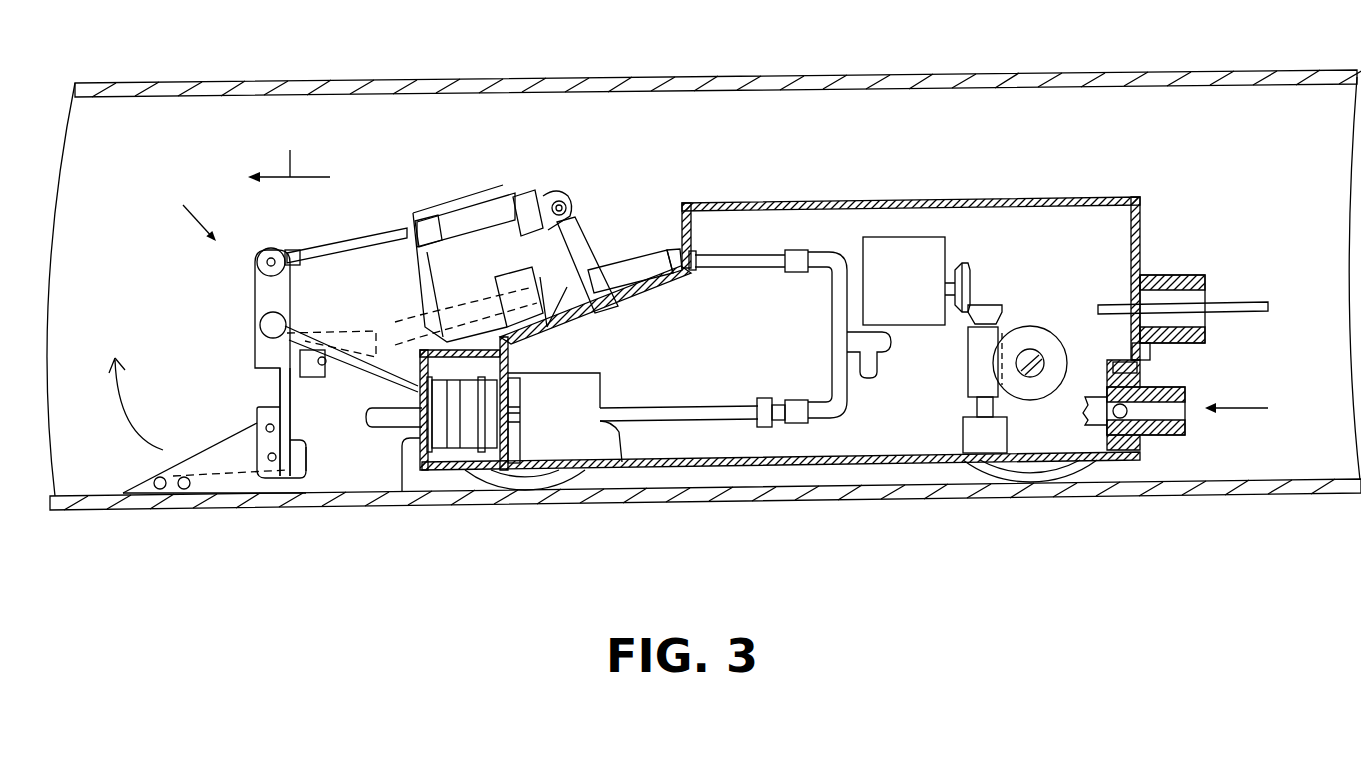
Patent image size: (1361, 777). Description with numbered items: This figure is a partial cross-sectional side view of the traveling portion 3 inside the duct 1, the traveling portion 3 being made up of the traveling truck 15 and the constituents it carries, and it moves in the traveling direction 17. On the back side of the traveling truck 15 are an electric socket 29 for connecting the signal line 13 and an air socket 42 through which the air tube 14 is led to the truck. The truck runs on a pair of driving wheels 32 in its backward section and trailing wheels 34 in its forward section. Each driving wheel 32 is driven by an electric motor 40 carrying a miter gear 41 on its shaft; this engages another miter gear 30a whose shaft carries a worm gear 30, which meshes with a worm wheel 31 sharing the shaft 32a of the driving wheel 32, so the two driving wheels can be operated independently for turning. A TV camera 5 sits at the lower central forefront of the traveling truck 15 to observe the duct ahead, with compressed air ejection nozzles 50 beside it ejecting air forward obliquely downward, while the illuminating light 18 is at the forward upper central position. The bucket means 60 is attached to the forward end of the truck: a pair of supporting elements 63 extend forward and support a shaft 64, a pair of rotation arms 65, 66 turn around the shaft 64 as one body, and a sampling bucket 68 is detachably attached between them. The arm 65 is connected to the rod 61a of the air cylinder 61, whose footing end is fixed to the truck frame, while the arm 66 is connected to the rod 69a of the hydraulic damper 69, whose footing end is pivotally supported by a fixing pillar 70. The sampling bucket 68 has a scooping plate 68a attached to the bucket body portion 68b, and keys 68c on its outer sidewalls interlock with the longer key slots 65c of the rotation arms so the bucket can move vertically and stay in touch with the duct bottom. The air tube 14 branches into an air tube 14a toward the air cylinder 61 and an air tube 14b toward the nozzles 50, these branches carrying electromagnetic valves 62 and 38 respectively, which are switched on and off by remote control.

The duct 1 is at (764, 76).
The traveling portion 3 is at (668, 185).
The TV camera 5 is at (403, 492).
The signal line 13 is at (1254, 313).
The air tube 14 is at (878, 380).
The air tube 14a is at (740, 253).
The air tube 14b is at (830, 422).
The traveling truck 15 is at (727, 470).
The traveling direction 17 is at (289, 146).
The illuminating light 18 is at (441, 207).
The electric socket 29 is at (1187, 273).
The worm gear 30 is at (975, 357).
The miter gear 30a is at (990, 303).
The worm wheel 31 is at (1043, 330).
The driving wheel 32 is at (1030, 482).
The shaft of the driving wheel 32a is at (1034, 378).
The trailing wheel 34 is at (523, 490).
The electromagnetic valve 38 is at (793, 398).
The electric motor 40 is at (913, 235).
The miter gear 41 is at (963, 268).
The air socket 42 is at (1160, 437).
The compressed air ejection nozzle 50 is at (383, 432).
The bucket means 60 is at (176, 205).
The air cylinder 61 is at (628, 266).
The rod 61a is at (388, 318).
The electromagnetic valve 62 is at (801, 248).
The supporting element 63 is at (366, 374).
The shaft 64 is at (260, 324).
The rotation arm 65 is at (253, 293).
The rotation arm 66 is at (285, 422).
The key slot 65c is at (278, 408).
The sampling bucket 68 is at (197, 449).
The scooping plate 68a is at (137, 482).
The bucket body portion 68b is at (218, 470).
The key 68c is at (305, 471).
The hydraulic damper 69 is at (485, 212).
The rod 69a is at (356, 244).
The fixing pillar 70 is at (575, 227).